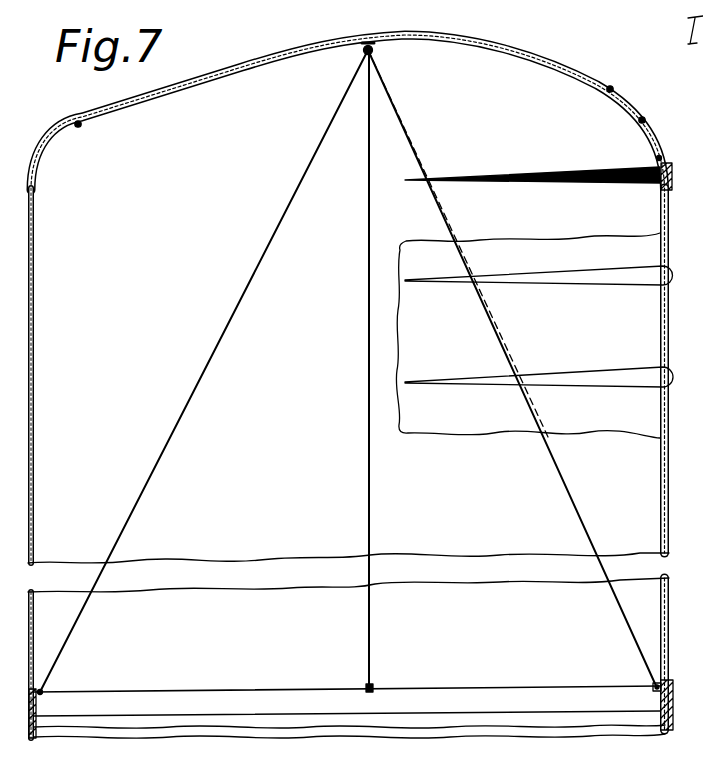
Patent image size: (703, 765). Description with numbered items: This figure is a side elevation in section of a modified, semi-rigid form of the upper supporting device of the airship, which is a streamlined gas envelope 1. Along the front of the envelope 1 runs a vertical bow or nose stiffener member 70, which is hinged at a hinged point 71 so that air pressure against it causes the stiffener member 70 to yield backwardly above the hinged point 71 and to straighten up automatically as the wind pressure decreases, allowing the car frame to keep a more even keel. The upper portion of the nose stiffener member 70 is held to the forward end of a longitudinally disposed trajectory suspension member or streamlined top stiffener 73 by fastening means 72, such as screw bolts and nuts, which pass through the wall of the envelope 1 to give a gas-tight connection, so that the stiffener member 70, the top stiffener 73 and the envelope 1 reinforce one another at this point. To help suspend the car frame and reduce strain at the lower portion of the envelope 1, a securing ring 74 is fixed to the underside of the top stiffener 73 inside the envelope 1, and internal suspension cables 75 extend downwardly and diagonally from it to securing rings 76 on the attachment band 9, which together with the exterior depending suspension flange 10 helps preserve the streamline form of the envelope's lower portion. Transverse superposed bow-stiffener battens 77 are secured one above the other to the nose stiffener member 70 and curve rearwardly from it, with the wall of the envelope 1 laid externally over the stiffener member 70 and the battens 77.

The gas envelope 1 is at (43, 231).
The attachment band 9 is at (219, 696).
The suspension flange 10 is at (674, 705).
The nose stiffener member 70 is at (660, 507).
The hinge point 71 is at (658, 680).
The fastening means 72 is at (639, 119).
The streamlined top stiffener 73 is at (230, 63).
The securing ring 74 is at (362, 53).
The suspension cables 75 is at (405, 133).
The securing rings 76 is at (42, 694).
The bow-stiffener battens 77 is at (659, 182).